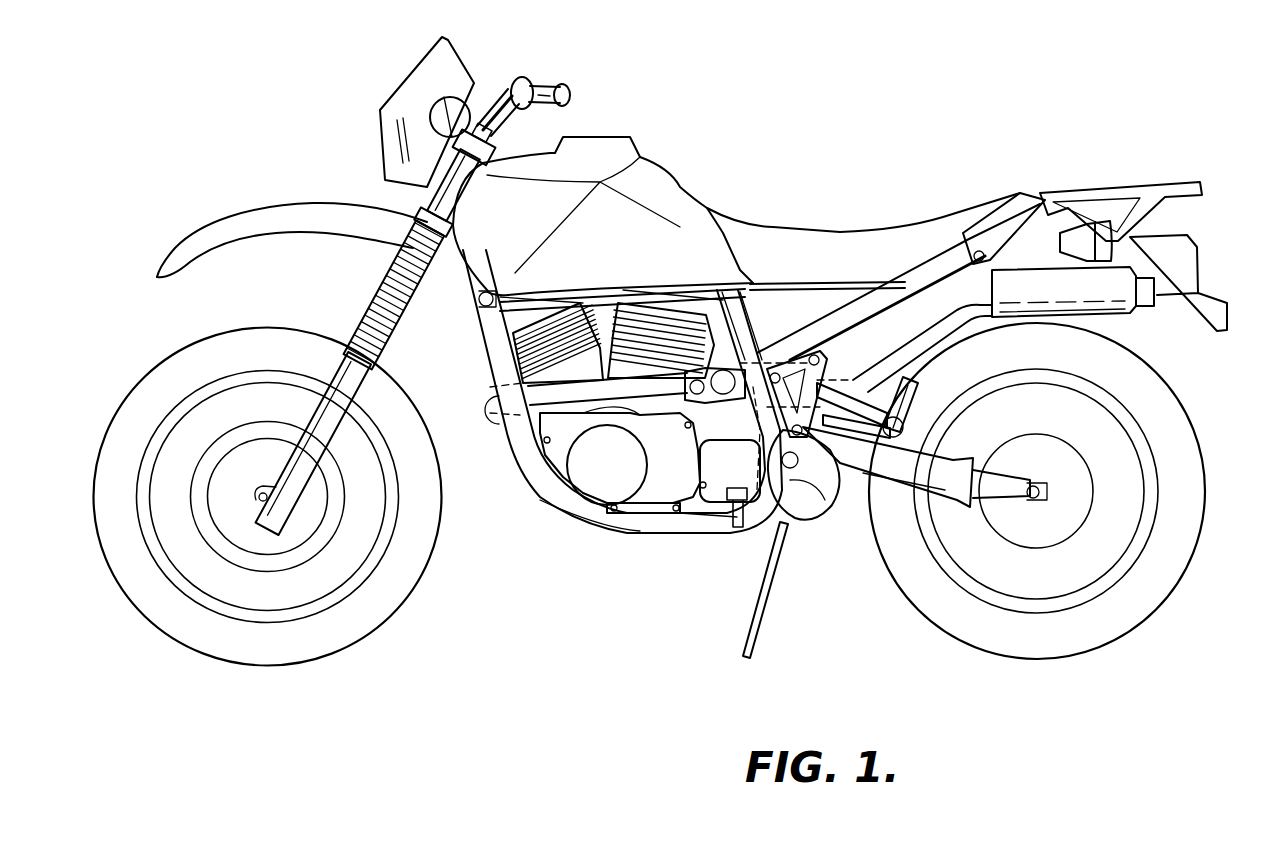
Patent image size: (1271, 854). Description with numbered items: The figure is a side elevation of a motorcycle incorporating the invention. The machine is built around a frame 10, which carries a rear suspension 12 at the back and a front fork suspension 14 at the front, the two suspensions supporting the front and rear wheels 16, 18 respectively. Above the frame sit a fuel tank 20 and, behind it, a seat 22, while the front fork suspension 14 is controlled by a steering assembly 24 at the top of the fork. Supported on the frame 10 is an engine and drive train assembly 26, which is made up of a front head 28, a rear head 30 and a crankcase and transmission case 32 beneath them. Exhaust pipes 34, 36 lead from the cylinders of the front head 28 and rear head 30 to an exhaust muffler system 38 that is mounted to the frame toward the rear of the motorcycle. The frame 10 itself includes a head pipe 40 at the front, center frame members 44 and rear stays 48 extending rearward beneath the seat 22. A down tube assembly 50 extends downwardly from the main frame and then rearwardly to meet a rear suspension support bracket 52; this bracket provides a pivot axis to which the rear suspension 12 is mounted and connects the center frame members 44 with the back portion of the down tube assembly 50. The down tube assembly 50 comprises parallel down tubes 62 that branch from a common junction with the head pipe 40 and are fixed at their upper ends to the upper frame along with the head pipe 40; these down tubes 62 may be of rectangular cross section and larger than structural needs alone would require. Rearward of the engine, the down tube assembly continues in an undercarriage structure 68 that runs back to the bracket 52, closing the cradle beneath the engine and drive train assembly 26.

The frame 10 is at (750, 304).
The rear suspension 12 is at (855, 478).
The front fork suspension 14 is at (395, 340).
The front wheel 16 is at (357, 638).
The rear wheel 18 is at (960, 632).
The fuel tank 20 is at (685, 180).
The seat 22 is at (938, 215).
The steering assembly 24 is at (507, 95).
The engine and drive train assembly 26 is at (630, 410).
The front head 28 is at (567, 300).
The rear head 30 is at (667, 297).
The crankcase and transmission case 32 is at (617, 530).
The exhaust pipe 34 is at (630, 410).
The exhaust pipe 36 is at (813, 530).
The exhaust muffler system 38 is at (923, 348).
The head pipe 40 is at (470, 195).
The center frame members 44 is at (753, 327).
The rear stays 48 is at (871, 303).
The down tube assembly 50 is at (537, 514).
The rear suspension support bracket 52 is at (760, 472).
The parallel down tubes 62 is at (490, 370).
The undercarriage structure 68 is at (697, 530).